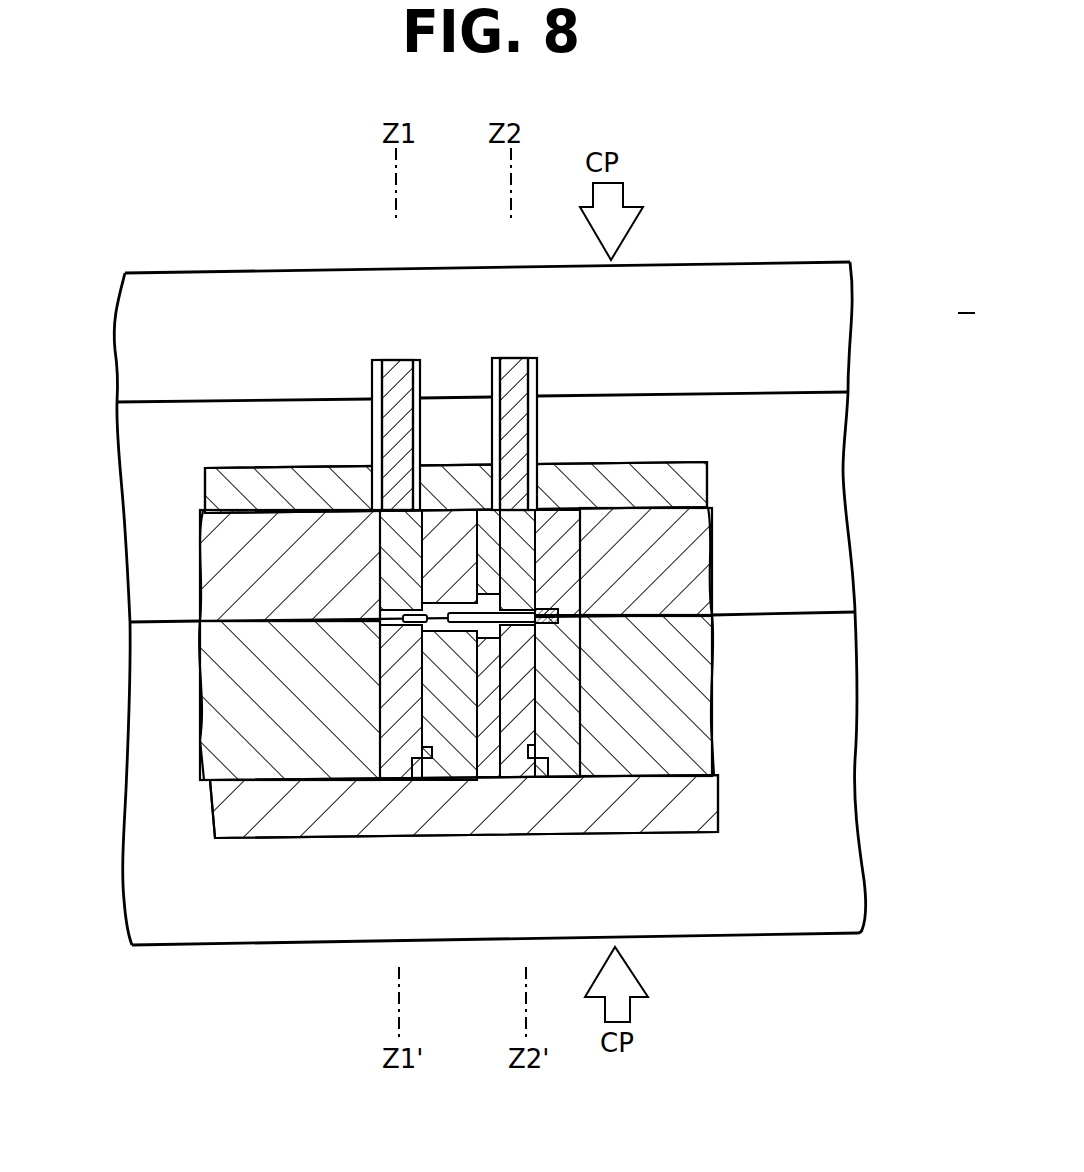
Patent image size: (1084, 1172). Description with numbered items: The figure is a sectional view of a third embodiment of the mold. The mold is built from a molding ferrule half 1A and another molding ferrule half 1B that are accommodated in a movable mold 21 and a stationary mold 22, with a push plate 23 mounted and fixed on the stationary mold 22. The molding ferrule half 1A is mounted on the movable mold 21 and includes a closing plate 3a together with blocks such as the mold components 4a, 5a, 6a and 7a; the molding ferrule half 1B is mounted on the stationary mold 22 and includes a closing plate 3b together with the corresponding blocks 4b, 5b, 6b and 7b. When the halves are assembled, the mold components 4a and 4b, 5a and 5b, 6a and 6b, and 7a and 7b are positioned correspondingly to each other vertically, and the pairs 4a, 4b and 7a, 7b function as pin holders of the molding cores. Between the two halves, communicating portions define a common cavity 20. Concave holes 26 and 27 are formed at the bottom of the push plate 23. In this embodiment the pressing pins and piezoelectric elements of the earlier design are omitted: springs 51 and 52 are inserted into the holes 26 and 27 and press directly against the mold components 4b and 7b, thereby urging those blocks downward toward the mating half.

The molding ferrule half 1A is at (723, 705).
The molding ferrule half 1B is at (719, 557).
The closing plate 3a is at (707, 802).
The closing plate 3b is at (707, 473).
The mold component 4a is at (408, 762).
The mold component 4b is at (383, 556).
The mold component 5a is at (458, 760).
The mold component 5b is at (442, 530).
The mold component 6a is at (499, 762).
The mold component 6b is at (487, 520).
The mold component 7a is at (518, 762).
The mold component 7b is at (556, 528).
The common cavity 20 is at (388, 592).
The movable mold 21 is at (843, 836).
The stationary mold 22 is at (838, 513).
The push plate 23 is at (838, 356).
The concave hole 26 is at (370, 382).
The concave hole 27 is at (537, 363).
The spring 51 is at (392, 375).
The spring 52 is at (512, 373).